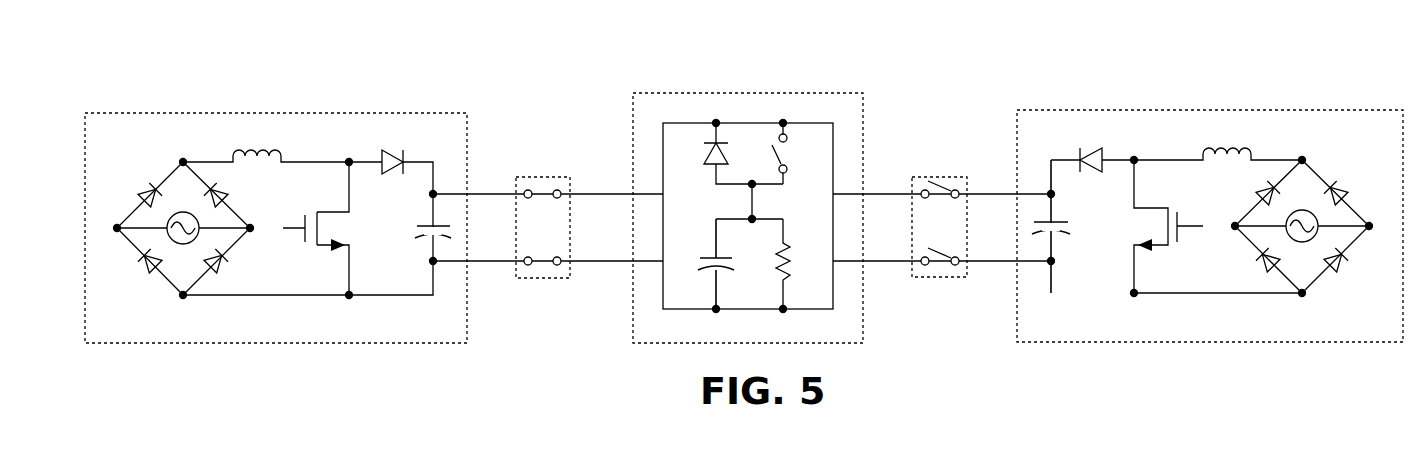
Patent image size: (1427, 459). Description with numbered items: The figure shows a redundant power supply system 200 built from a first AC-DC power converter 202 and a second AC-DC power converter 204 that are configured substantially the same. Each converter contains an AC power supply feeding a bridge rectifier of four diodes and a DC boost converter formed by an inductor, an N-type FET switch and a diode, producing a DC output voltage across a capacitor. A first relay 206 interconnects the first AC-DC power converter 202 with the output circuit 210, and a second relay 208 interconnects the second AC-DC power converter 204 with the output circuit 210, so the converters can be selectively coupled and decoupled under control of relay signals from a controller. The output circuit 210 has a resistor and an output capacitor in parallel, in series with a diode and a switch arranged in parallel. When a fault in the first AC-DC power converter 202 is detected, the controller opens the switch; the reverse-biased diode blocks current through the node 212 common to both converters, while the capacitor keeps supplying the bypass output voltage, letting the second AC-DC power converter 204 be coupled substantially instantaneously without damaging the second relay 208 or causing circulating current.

The redundant power supply system 200 is at (176, 66).
The first AC-DC power converter 202 is at (313, 113).
The second AC-DC power converter 204 is at (1226, 110).
The first relay 206 is at (547, 177).
The second relay 208 is at (928, 177).
The output circuit 210 is at (715, 93).
The node 212 is at (766, 123).